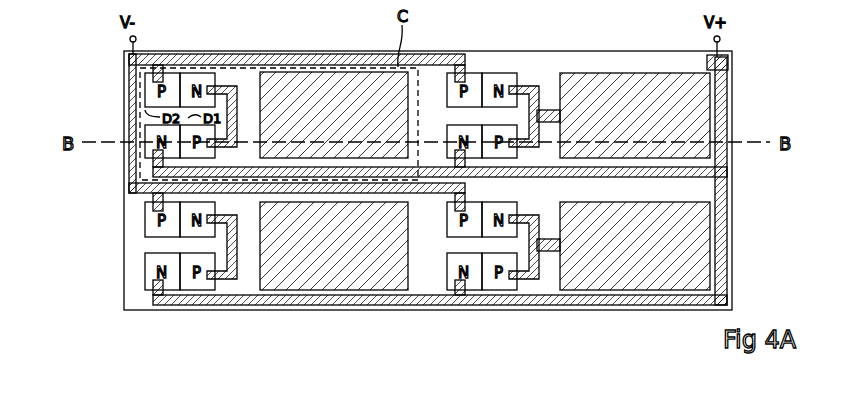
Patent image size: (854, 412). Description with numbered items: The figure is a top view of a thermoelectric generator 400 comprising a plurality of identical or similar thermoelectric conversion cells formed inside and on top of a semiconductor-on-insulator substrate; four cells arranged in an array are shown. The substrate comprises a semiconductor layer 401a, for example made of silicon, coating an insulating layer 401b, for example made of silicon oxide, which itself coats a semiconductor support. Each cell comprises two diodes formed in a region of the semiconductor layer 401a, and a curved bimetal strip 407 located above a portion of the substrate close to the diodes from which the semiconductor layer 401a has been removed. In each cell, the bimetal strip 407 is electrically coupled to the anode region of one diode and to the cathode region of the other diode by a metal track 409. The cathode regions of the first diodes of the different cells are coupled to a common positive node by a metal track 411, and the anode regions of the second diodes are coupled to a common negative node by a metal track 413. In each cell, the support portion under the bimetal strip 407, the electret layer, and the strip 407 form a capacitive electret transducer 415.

The thermoelectric generator 400 is at (108, 51).
The semiconductor layer 401a is at (497, 72).
The insulating layer 401b is at (539, 68).
The curved bimetal strip 407 is at (418, 70).
The metal track 409 is at (238, 99).
The metal track 411 is at (583, 174).
The metal track 413 is at (445, 57).
The capacitive electret transducer 415 is at (411, 113).